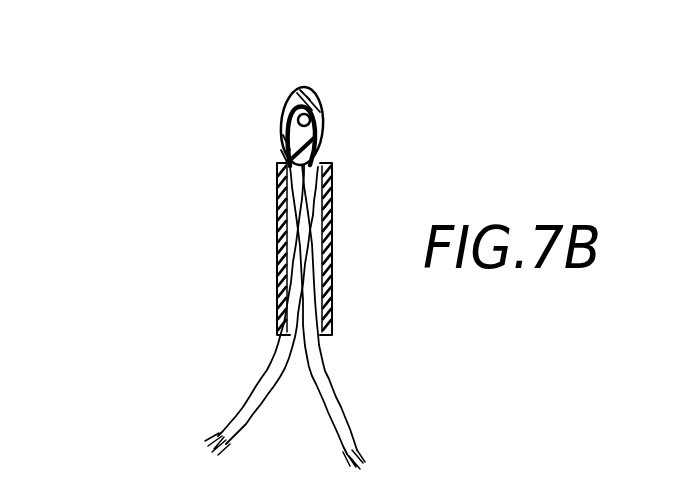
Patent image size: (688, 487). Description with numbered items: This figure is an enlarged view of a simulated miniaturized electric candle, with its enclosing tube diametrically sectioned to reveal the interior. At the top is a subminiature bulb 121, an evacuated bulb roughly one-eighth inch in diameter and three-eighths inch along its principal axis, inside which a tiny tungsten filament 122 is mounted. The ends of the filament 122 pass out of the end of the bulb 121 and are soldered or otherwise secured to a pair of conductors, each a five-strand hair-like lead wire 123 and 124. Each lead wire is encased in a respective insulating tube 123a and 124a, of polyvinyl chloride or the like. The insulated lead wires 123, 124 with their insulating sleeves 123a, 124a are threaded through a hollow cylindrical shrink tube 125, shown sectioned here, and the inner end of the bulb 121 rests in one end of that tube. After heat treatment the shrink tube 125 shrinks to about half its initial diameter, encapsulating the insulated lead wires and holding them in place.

The subminiature bulb 121 is at (320, 107).
The tungsten filament 122 is at (325, 150).
The lead wire 123 is at (217, 437).
The insulating tube 123a is at (263, 367).
The lead wire 124 is at (360, 455).
The insulating tube 124a is at (318, 367).
The shrink tube 125 is at (330, 208).